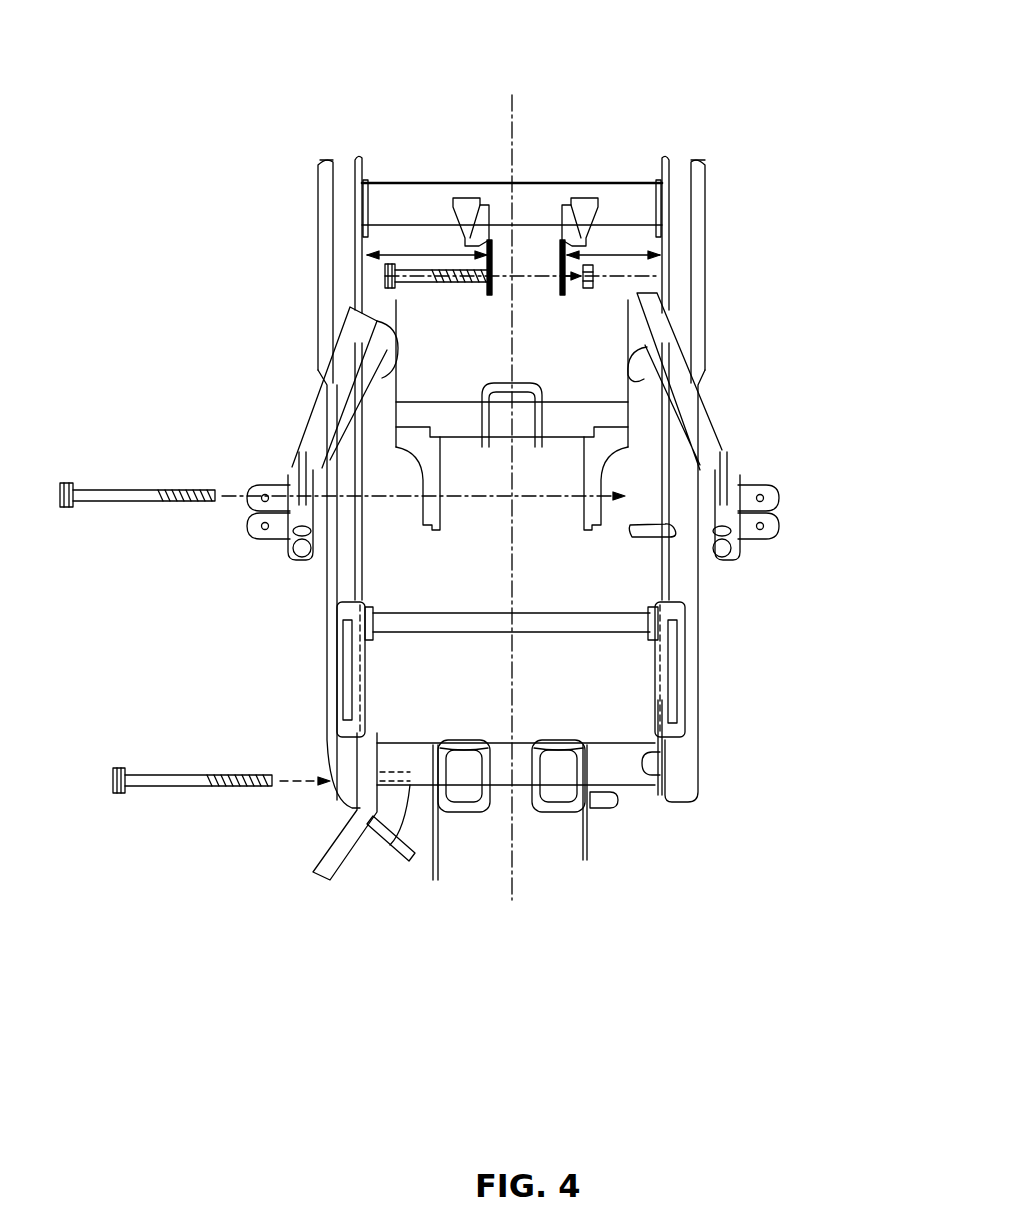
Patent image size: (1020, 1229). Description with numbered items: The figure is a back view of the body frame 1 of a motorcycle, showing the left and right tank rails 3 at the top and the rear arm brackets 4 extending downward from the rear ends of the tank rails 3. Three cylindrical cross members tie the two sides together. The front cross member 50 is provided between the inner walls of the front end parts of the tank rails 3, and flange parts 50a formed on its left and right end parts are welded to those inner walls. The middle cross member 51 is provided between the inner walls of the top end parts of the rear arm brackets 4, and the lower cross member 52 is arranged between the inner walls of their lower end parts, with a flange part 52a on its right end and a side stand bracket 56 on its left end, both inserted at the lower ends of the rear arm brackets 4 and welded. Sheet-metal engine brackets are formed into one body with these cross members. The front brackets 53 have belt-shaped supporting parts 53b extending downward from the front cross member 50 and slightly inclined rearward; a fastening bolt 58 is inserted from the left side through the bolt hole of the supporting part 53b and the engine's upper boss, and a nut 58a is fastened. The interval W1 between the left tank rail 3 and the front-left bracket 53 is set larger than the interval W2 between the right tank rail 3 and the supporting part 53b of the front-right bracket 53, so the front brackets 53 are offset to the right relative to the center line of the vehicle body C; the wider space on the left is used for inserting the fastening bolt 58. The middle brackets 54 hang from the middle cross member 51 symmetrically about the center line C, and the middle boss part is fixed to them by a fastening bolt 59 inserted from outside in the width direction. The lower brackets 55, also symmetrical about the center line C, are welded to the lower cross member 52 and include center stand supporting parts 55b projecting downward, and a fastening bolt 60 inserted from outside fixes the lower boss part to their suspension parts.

The body frame 1 is at (795, 79).
The tank rail 3 is at (315, 231).
The rear arm bracket 4 is at (315, 660).
The front cross member 50 is at (612, 170).
The flange part 50a is at (376, 162).
The middle cross member 51 is at (573, 402).
The lower cross member 52 is at (639, 790).
The flange part 52a is at (650, 770).
The front bracket 53 is at (462, 190).
The supporting part 53b is at (560, 293).
The middle bracket 54 is at (443, 480).
The lower bracket 55 is at (420, 876).
The center stand supporting part 55b is at (440, 878).
The side stand bracket 56 is at (330, 853).
The fastening bolt 58 is at (383, 289).
The nut 58a is at (603, 283).
The fastening bolt 59 is at (100, 490).
The fastening bolt 60 is at (152, 775).
The center line of the vehicle body C is at (513, 116).
The interval w1 W1 is at (416, 252).
The interval w2 W2 is at (628, 250).